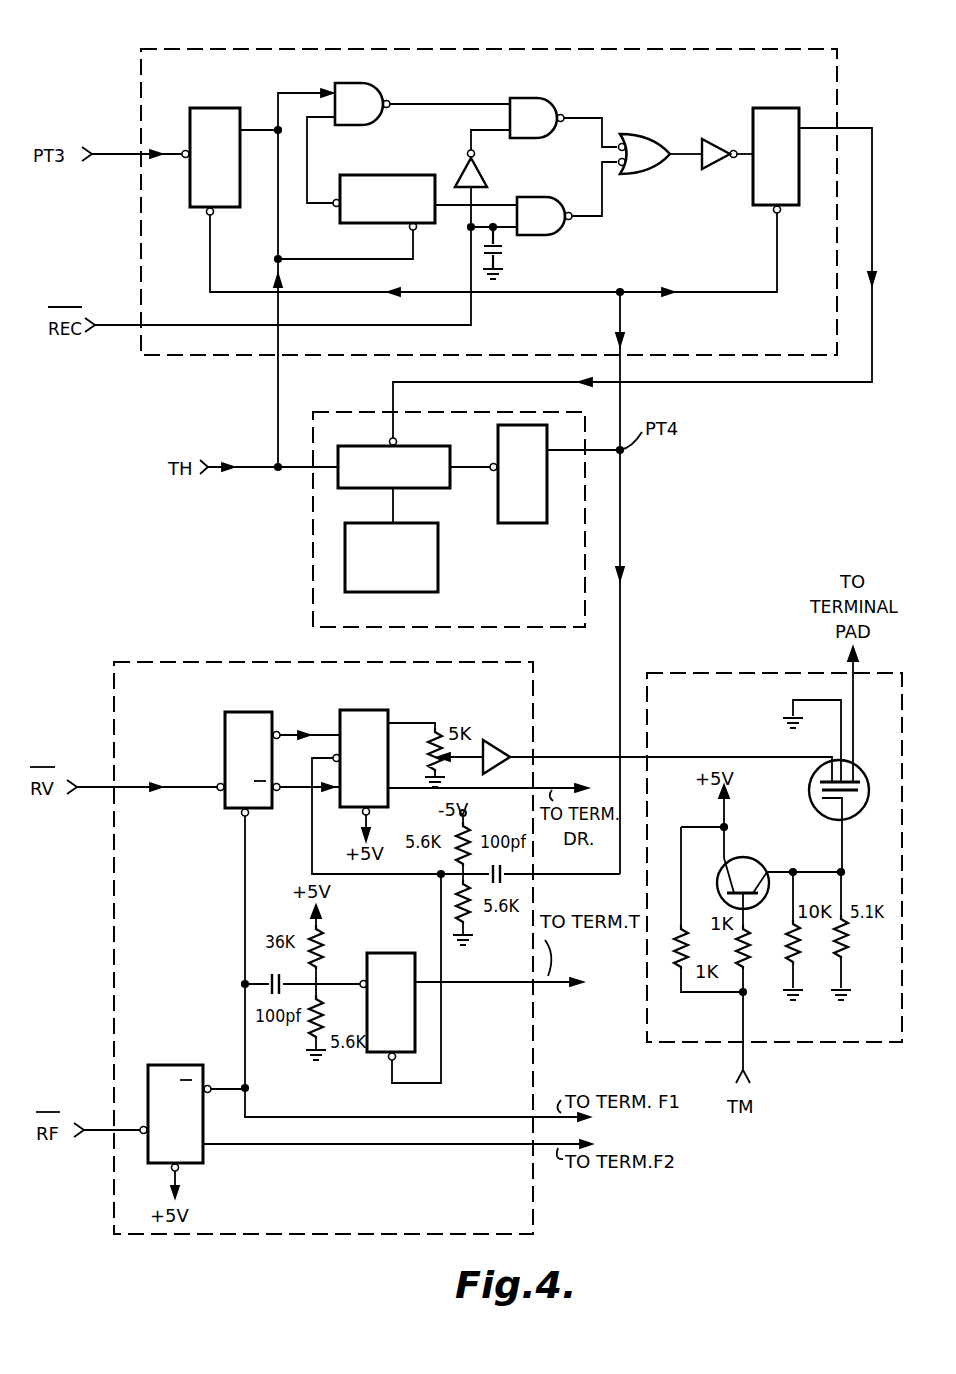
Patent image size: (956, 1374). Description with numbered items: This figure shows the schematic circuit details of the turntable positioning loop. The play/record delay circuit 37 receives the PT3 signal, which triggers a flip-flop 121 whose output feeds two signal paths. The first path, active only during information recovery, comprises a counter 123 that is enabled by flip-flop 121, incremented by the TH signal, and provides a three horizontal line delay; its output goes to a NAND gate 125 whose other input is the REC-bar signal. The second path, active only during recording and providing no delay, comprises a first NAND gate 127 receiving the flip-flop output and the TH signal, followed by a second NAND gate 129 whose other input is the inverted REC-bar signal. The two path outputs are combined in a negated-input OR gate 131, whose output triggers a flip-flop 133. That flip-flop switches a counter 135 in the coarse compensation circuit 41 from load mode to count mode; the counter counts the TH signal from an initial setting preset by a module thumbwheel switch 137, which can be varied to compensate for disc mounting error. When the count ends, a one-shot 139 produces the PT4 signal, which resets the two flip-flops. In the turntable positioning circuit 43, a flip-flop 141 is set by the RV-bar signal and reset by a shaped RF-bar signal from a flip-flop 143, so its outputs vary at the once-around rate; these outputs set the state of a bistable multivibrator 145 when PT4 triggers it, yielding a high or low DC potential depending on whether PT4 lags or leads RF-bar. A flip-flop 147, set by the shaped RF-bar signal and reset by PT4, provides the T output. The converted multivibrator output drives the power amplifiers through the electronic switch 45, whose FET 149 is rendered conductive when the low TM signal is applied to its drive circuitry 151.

The play/record delay circuit 37 is at (760, 49).
The flip-flop 121 is at (216, 108).
The counter 123 is at (400, 167).
The NAND gate 125 is at (564, 233).
The first NAND gate 127 is at (381, 91).
The second NAND gate 129 is at (552, 100).
The negated-input OR gate 131 is at (645, 134).
The flip-flop 133 is at (753, 186).
The coarse compensation circuit 41 is at (313, 537).
The counter 135 is at (404, 448).
The module thumbwheel switch 137 is at (358, 523).
The one-shot 139 is at (520, 523).
The turntable positioning circuit 43 is at (533, 1222).
The flip-flop 141 is at (225, 714).
The flip-flop 143 is at (172, 1065).
The bistable multivibrator 145 is at (365, 710).
The flip-flop 147 is at (392, 953).
The electronic switch 45 is at (815, 1042).
The FET 149 is at (812, 802).
The drive circuitry 151 is at (783, 845).